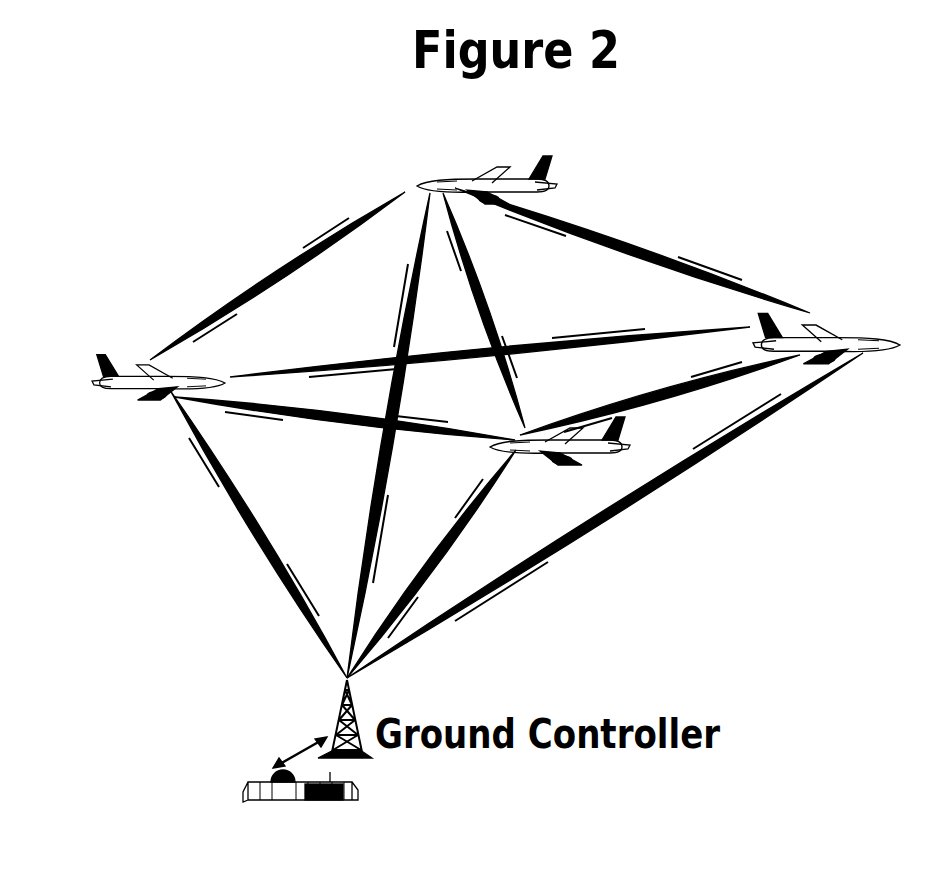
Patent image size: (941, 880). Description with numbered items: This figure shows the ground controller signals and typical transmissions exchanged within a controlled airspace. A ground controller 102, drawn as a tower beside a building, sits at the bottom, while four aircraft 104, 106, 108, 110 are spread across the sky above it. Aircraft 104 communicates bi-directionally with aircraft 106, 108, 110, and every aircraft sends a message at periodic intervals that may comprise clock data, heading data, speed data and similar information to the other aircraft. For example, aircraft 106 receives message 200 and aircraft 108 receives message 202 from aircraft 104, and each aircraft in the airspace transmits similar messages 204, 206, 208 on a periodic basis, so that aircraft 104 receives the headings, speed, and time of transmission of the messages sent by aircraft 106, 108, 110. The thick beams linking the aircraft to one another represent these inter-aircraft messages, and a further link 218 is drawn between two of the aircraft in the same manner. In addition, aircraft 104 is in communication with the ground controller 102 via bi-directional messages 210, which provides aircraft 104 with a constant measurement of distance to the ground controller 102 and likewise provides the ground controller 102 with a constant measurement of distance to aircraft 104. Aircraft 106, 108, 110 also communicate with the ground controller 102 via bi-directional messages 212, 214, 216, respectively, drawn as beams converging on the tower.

The ground controller 102 is at (340, 708).
The aircraft 104 is at (177, 372).
The aircraft 106 is at (462, 178).
The aircraft 108 is at (815, 338).
The aircraft 110 is at (580, 460).
The message 200 is at (280, 260).
The message 202 is at (575, 337).
The message 204 is at (360, 430).
The message 206 is at (670, 390).
The message 208 is at (672, 255).
The bi-directional messages 210 is at (230, 503).
The bi-directional messages 212 is at (400, 327).
The bi-directional messages 214 is at (710, 455).
The bi-directional messages 216 is at (475, 510).
The communication link between aircraft 106 and 110 218 is at (480, 250).